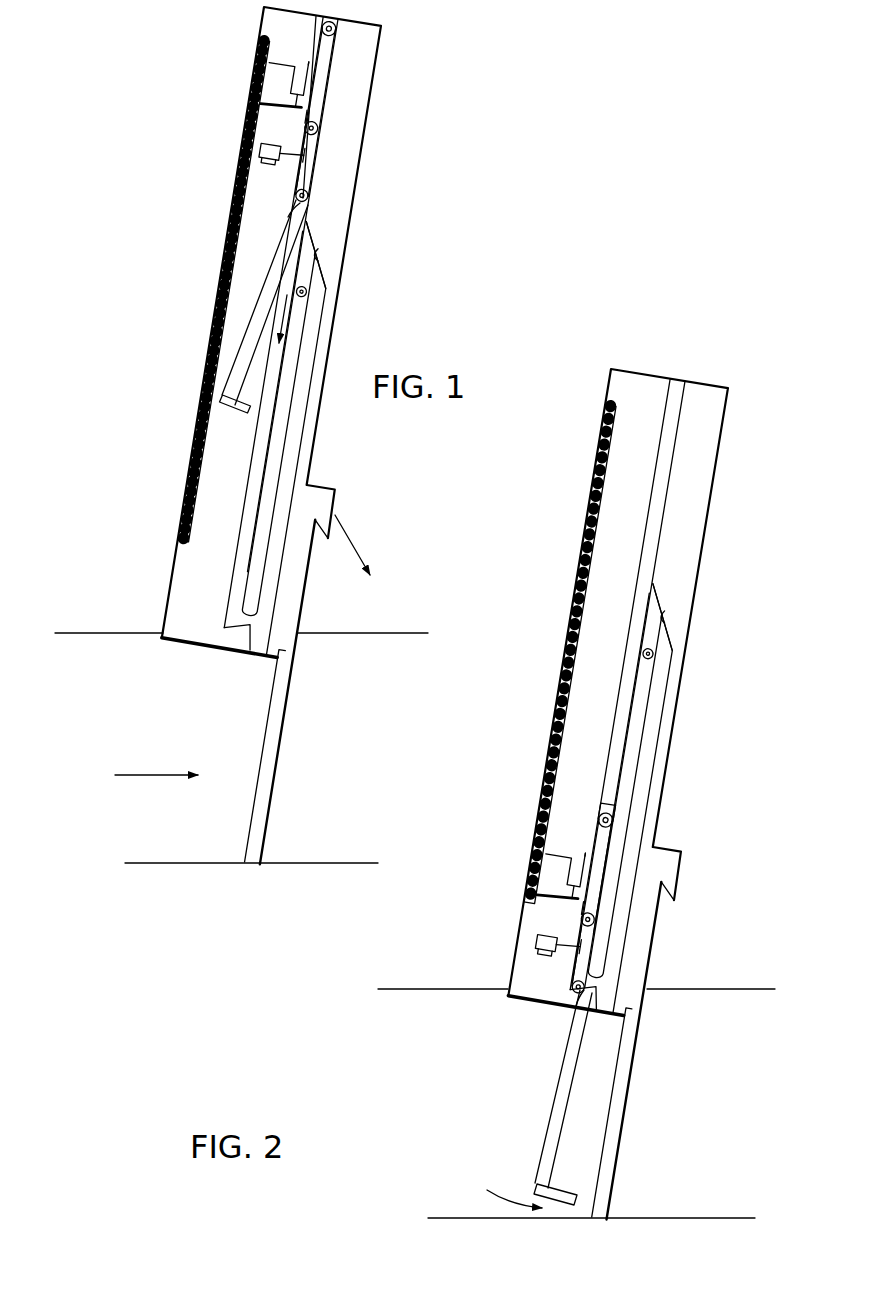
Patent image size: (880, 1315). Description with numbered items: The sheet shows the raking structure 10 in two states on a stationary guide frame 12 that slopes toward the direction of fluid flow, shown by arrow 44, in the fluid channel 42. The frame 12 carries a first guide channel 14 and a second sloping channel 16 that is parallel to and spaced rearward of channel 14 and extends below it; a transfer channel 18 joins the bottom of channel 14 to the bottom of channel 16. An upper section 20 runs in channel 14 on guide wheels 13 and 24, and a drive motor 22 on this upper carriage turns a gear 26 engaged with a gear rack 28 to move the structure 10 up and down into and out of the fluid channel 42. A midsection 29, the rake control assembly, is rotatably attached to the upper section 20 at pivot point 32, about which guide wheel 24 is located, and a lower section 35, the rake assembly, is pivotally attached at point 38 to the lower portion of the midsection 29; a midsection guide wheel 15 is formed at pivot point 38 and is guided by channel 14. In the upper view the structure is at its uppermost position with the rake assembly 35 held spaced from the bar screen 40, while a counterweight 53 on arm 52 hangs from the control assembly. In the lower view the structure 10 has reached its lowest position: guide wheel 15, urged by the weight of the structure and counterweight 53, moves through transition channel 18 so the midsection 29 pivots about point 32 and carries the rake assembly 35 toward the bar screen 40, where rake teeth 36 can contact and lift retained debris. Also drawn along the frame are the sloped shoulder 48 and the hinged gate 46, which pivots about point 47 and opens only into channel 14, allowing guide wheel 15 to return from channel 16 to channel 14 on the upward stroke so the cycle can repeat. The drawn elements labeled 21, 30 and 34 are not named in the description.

In FIG. 1, the raking structure 10 is at (92, 148).
In FIG. 1, the stationary guide frame 12 is at (344, 78).
In FIG. 1, the guide wheel 13 is at (340, 38).
In FIG. 2, the guide wheel 13 is at (598, 812).
In FIG. 1, the first guide channel 14 is at (346, 66).
In FIG. 2, the first guide channel 14 is at (680, 437).
In FIG. 1, the midsection guide wheel 15 is at (300, 208).
In FIG. 2, the midsection guide wheel 15 is at (580, 1000).
In FIG. 1, the second sloping channel 16 is at (290, 444).
In FIG. 2, the second sloping channel 16 is at (617, 933).
In FIG. 1, the transfer channel 18 is at (225, 628).
In FIG. 2, the transfer channel 18 is at (605, 1000).
In FIG. 1, the upper section 20 is at (298, 43).
In FIG. 2, the upper section 20 is at (578, 840).
In FIG. 1, the upper pulley 21 is at (338, 22).
In FIG. 2, the upper pulley 21 is at (612, 820).
In FIG. 1, the drive motor 22 is at (282, 102).
In FIG. 2, the drive motor 22 is at (558, 882).
In FIG. 1, the guide wheel 24 is at (318, 118).
In FIG. 2, the guide wheel 24 is at (600, 905).
In FIG. 1, the gear 26 is at (268, 68).
In FIG. 2, the gear 26 is at (548, 855).
In FIG. 1, the gear rack 28 is at (243, 183).
In FIG. 2, the gear rack 28 is at (592, 554).
In FIG. 1, the midsection 29 is at (290, 138).
In FIG. 2, the midsection 29 is at (572, 927).
In FIG. 1, the belt run 30 is at (318, 152).
In FIG. 2, the belt run 30 is at (595, 930).
In FIG. 1, the pivot point 32 is at (321, 128).
In FIG. 2, the pivot point 32 is at (595, 912).
In FIG. 1, the lever arm 34 is at (250, 338).
In FIG. 2, the lever arm 34 is at (556, 1113).
In FIG. 1, the lower section 35 is at (258, 270).
In FIG. 2, the lower section 35 is at (555, 1078).
In FIG. 1, the rake teeth 36 is at (225, 403).
In FIG. 2, the rake teeth 36 is at (566, 1181).
In FIG. 1, the pivot point 38 is at (310, 196).
In FIG. 2, the pivot point 38 is at (602, 985).
In FIG. 1, the bar screen 40 is at (277, 740).
In FIG. 2, the bar screen 40 is at (617, 1120).
In FIG. 1, the fluid channel 42 is at (148, 696).
In FIG. 1, the arrow 44 is at (162, 778).
In FIG. 1, the hinged gate 46 is at (320, 262).
In FIG. 2, the hinged gate 46 is at (650, 637).
In FIG. 1, the pivot point 47 is at (308, 298).
In FIG. 2, the pivot point 47 is at (652, 662).
In FIG. 1, the sloped shoulder 48 is at (322, 278).
In FIG. 2, the sloped shoulder 48 is at (665, 620).
In FIG. 1, the arm 52 is at (274, 162).
In FIG. 2, the arm 52 is at (556, 960).
In FIG. 1, the counterweight 53 is at (258, 150).
In FIG. 2, the counterweight 53 is at (545, 950).